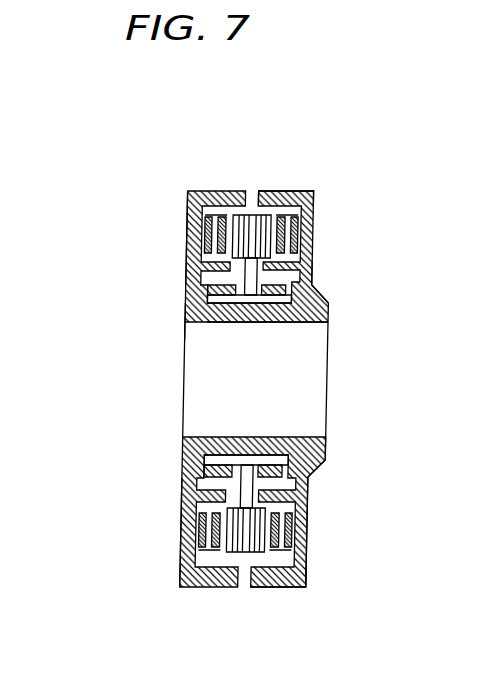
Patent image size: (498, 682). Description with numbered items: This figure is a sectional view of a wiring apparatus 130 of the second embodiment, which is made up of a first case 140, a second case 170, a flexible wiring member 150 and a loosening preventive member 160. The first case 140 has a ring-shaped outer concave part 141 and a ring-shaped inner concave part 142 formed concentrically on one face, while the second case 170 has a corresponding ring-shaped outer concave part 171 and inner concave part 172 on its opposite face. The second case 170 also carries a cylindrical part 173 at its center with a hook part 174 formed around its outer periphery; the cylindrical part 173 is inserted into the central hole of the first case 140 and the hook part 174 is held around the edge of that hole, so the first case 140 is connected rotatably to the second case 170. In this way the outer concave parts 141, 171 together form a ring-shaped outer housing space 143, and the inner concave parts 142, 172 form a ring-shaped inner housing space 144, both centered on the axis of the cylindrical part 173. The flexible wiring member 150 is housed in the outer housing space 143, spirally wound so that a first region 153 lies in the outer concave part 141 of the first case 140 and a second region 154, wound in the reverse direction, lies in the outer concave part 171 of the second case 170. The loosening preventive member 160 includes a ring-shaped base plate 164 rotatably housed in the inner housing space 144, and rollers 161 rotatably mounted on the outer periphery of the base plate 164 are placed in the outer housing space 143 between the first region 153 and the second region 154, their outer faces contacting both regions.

The wiring apparatus 130 is at (150, 229).
The first case 140 is at (314, 202).
The outer concave part 141 is at (285, 191).
The inner concave part 142 is at (310, 274).
The outer housing space 143 is at (308, 590).
The inner housing space 144 is at (310, 488).
The flexible wiring member 150 is at (222, 214).
The first region 153 is at (283, 533).
The second region 154 is at (212, 540).
The loosening preventive member 160 is at (188, 462).
The roller 161 is at (248, 222).
The base plate 164 is at (302, 329).
The second case 170 is at (180, 487).
The outer concave part 171 is at (188, 190).
The inner concave part 172 is at (204, 294).
The cylindrical part 173 is at (187, 330).
The hook part 174 is at (312, 474).